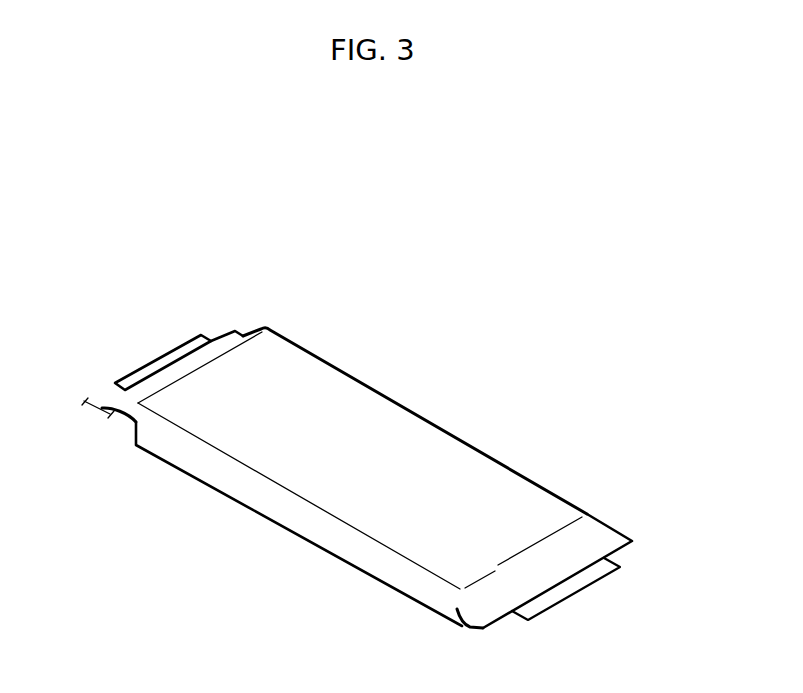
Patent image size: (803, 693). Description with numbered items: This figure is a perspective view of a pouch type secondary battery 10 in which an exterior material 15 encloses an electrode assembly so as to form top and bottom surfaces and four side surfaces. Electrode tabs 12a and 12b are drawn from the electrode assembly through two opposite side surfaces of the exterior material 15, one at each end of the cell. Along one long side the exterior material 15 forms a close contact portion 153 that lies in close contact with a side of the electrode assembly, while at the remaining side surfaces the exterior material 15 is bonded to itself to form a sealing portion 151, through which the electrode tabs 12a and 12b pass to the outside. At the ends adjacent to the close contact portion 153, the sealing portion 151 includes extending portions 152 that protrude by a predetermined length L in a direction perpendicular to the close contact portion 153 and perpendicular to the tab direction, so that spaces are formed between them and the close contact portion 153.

The pouch type secondary battery 10 is at (87, 243).
The electrode tab 12a is at (163, 360).
The electrode tab 12b is at (567, 594).
The exterior material 15 is at (452, 408).
The sealing portion 151 is at (620, 531).
The extending portion 152 is at (105, 413).
The close contact portion 153 is at (300, 538).
The length L is at (90, 396).